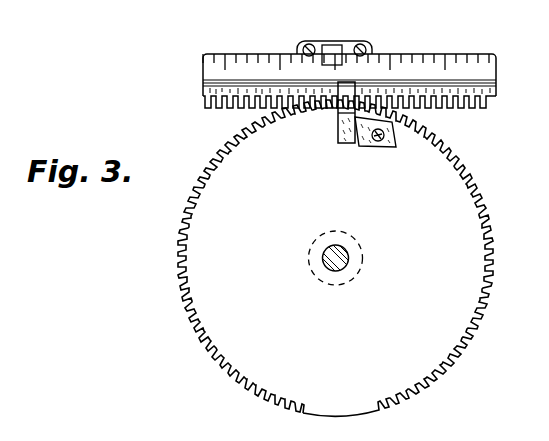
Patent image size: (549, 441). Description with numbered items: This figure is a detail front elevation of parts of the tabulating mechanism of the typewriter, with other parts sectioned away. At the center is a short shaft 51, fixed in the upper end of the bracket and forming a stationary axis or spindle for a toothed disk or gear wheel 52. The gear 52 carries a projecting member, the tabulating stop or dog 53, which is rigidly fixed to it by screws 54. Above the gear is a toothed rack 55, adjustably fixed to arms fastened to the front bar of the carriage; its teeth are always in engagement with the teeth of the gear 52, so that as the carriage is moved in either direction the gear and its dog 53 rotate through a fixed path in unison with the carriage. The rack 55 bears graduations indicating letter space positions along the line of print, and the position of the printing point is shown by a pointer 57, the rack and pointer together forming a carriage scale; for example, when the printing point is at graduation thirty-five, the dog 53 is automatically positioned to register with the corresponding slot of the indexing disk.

The short shaft 51 is at (343, 252).
The toothed disk or gear wheel 52 is at (335, 258).
The tabulating stop or dog 53 is at (340, 130).
The screws 54 is at (388, 142).
The toothed rack 55 is at (424, 63).
The pointer 57 is at (328, 52).